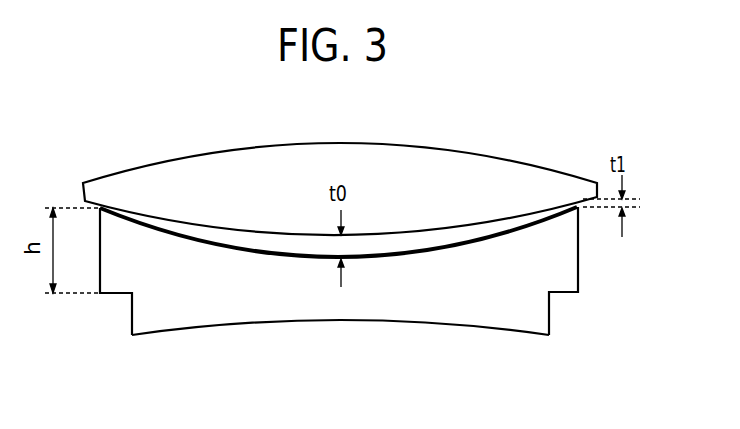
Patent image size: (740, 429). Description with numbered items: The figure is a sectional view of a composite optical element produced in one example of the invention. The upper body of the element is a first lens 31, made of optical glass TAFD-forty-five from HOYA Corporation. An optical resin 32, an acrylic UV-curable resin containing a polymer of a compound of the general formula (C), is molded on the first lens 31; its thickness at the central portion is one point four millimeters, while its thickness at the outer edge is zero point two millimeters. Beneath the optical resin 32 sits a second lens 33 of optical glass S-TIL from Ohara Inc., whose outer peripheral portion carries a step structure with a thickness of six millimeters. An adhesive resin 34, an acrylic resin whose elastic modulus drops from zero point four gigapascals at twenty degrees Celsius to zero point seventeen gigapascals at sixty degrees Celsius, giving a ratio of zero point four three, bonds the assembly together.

The first lens 31 is at (467, 168).
The optical resin 32 is at (520, 225).
The second lens 33 is at (460, 312).
The adhesive resin 34 is at (210, 250).